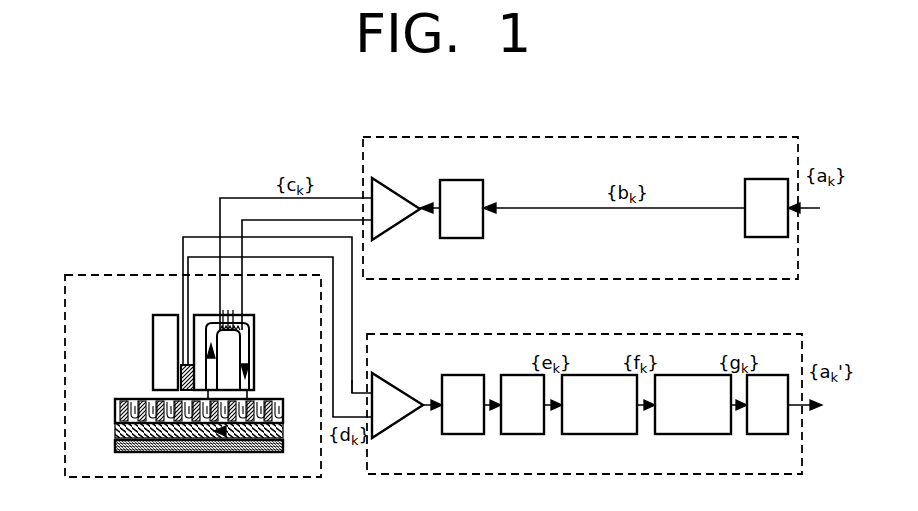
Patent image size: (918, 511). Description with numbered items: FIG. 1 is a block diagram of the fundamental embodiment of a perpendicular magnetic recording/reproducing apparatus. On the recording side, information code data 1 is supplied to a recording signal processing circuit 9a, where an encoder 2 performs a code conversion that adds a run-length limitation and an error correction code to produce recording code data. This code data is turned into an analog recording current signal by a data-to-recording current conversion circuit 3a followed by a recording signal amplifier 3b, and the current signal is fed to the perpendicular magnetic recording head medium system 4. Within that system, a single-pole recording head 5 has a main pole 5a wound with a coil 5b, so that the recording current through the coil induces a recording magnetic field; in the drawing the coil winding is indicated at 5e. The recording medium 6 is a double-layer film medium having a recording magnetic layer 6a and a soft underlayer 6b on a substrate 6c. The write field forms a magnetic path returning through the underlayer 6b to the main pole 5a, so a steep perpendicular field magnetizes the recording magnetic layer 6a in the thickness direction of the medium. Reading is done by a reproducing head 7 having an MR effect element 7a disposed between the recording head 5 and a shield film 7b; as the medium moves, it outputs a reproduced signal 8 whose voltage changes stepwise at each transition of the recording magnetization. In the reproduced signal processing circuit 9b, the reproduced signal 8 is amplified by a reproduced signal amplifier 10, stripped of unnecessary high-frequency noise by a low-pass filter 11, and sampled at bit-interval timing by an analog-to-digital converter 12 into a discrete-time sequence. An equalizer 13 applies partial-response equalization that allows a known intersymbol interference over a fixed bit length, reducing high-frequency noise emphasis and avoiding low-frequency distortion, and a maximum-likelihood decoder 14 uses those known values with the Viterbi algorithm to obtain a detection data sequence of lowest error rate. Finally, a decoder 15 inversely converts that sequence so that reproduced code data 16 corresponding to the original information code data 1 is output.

The information code data 1 is at (813, 207).
The encoder 2 is at (766, 208).
The data-to-recording current conversion circuit 3a is at (461, 209).
The recording signal amplifier 3b is at (396, 209).
The perpendicular magnetic recording head medium system 4 is at (193, 376).
The recording head 5 is at (254, 348).
The main pole 5a is at (251, 368).
The coil 5b is at (222, 360).
The write coil 5e is at (257, 313).
The recording medium 6 is at (175, 430).
The recording magnetic layer 6a is at (185, 411).
The soft underlayer 6b is at (185, 431).
The substrate 6c is at (185, 450).
The reproducing head 7 is at (145, 352).
The MR effect element 7a is at (183, 372).
The shield film 7b is at (160, 380).
The reproduced signal 8 is at (347, 397).
The recording signal processing circuit 9a is at (580, 208).
The reproduced signal processing circuit 9b is at (584, 404).
The reproduced signal amplifier 10 is at (397, 405).
The low-pass filter 11 is at (463, 404).
The analog-to-digital converter 12 is at (522, 404).
The equalizer 13 is at (599, 404).
The maximum-likelihood decoder 14 is at (693, 404).
The decoder 15 is at (767, 404).
The reproduced code data 16 is at (818, 404).